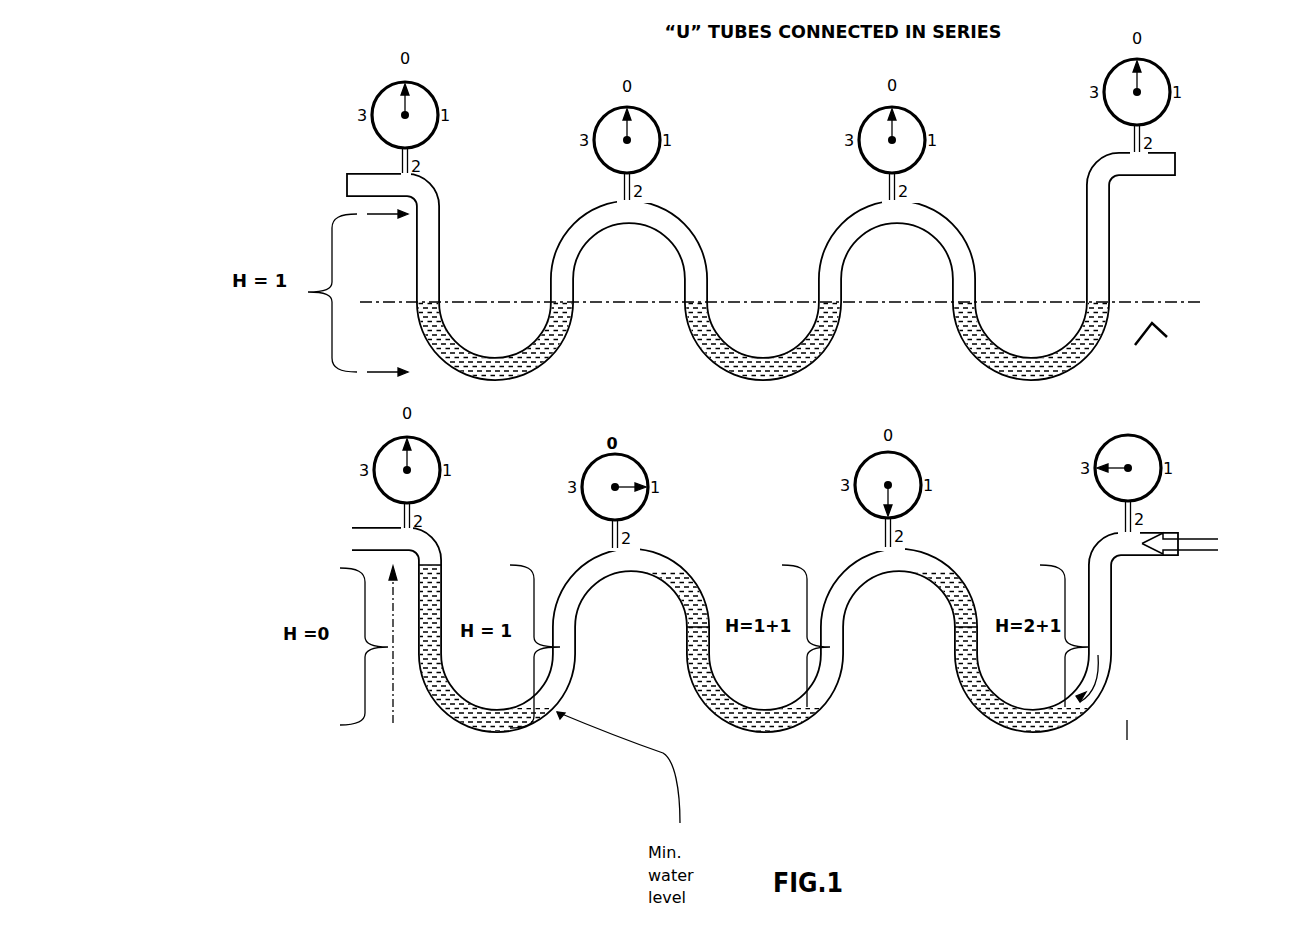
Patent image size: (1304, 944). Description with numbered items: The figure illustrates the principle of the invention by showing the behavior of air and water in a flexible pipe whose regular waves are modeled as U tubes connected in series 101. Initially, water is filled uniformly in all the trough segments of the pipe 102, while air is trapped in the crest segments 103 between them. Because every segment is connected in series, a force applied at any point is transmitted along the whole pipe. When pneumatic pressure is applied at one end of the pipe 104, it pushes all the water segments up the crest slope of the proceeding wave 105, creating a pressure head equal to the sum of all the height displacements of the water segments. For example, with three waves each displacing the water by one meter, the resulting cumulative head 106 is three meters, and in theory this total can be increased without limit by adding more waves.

The U tubes connected in series 101 is at (1136, 227).
The trough segments of the pipe 102 is at (985, 352).
The crest segments 103 is at (937, 220).
The pneumatic pressure applied at one end of the pipe 104 is at (1205, 546).
The water segments pushed up the crest slope 105 is at (450, 698).
The cumulative head 106 is at (1105, 472).